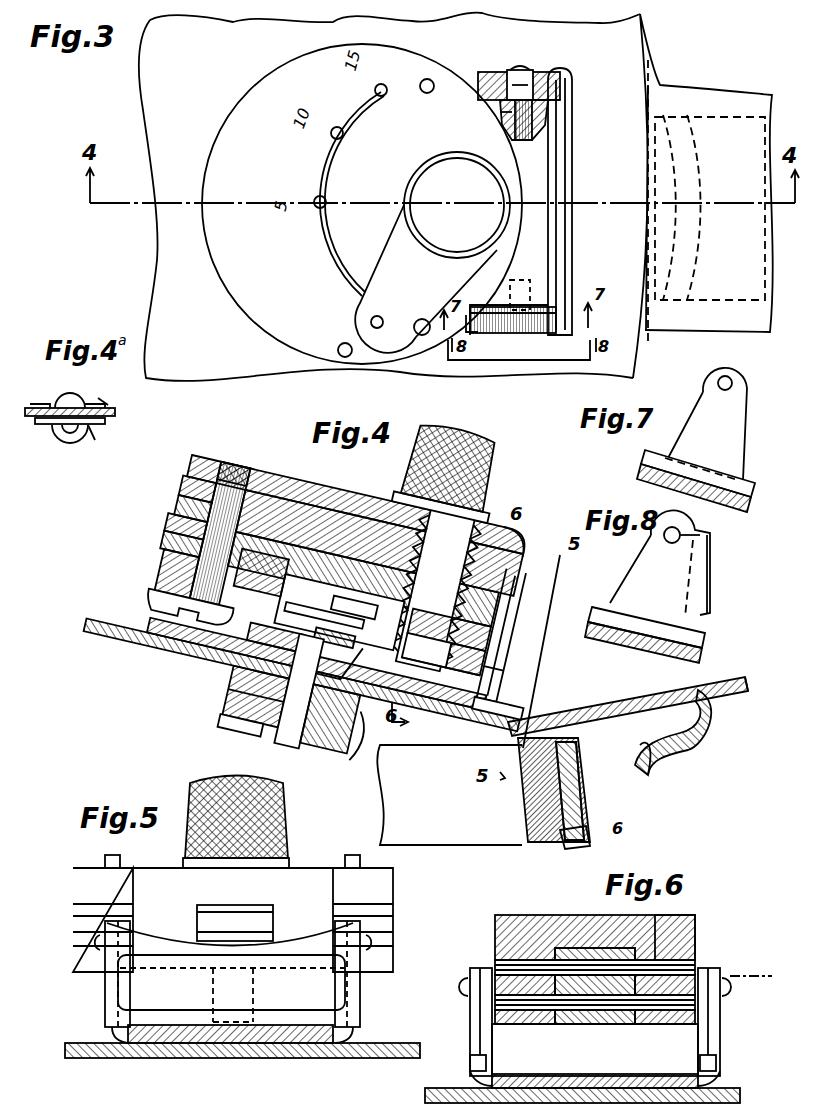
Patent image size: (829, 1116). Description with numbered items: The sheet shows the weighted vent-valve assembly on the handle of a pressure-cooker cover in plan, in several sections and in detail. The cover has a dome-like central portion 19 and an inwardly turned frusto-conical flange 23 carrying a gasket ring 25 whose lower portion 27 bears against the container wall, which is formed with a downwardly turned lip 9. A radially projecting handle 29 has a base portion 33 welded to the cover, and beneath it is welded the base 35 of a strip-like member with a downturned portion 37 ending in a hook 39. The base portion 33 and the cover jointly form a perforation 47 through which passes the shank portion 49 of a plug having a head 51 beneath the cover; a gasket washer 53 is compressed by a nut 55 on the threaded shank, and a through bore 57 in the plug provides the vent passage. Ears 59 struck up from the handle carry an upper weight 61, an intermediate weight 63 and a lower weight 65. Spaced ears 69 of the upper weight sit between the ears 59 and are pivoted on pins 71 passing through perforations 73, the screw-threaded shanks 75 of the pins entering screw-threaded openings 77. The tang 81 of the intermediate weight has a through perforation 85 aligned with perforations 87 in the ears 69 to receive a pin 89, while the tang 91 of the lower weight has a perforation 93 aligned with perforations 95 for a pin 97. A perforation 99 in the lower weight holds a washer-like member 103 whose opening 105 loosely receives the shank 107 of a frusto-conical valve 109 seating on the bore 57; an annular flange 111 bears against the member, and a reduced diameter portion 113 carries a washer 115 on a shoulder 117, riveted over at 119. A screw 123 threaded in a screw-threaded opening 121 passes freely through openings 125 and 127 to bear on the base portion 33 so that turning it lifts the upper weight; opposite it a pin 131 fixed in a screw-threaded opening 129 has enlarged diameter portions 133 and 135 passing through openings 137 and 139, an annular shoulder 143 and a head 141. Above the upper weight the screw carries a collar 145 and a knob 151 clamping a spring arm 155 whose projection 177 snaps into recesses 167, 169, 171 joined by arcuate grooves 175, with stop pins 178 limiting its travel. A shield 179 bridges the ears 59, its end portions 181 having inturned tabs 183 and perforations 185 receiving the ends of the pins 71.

In FIG. 3, the downwardly turned lip 9 is at (705, 190).
In FIG. 3, the dome-like central portion 19 is at (160, 105).
In FIG. 4, the dome-like central portion 19 is at (121, 645).
In FIG. 7, the dome-like central portion 19 is at (750, 510).
In FIG. 8, the dome-like central portion 19 is at (643, 642).
In FIG. 5, the dome-like central portion 19 is at (250, 1058).
In FIG. 6, the dome-like central portion 19 is at (428, 1092).
In FIG. 4, the frusto-conical flange 23 is at (590, 800).
In FIG. 4, the gasket ring 25 is at (520, 790).
In FIG. 4, the lower portion of gasket ring 27 is at (592, 845).
In FIG. 3, the handle 29 is at (730, 90).
In FIG. 4, the handle 29 is at (633, 690).
In FIG. 5, the handle 29 is at (178, 1043).
In FIG. 6, the handle 29 is at (565, 1088).
In FIG. 4, the base portion 33 is at (175, 645).
In FIG. 7, the base portion 33 is at (748, 478).
In FIG. 3, the base of strip-like member 35 is at (735, 118).
In FIG. 4, the base of strip-like member 35 is at (746, 700).
In FIG. 4, the downturned portion 37 is at (688, 752).
In FIG. 3, the hook 39 is at (690, 265).
In FIG. 4, the hook 39 is at (648, 775).
In FIG. 4, the perforation 47 is at (232, 650).
In FIG. 4, the shank portion 49 is at (252, 705).
In FIG. 4, the head 51 is at (240, 682).
In FIG. 4, the gasket washer 53 is at (368, 728).
In FIG. 4, the nut 55 is at (248, 618).
In FIG. 4, the through bore 57 is at (292, 700).
In FIG. 3, the ears 59 is at (562, 80).
In FIG. 4, the ears 59 is at (490, 676).
In FIG. 7, the ears 59 is at (748, 420).
In FIG. 5, the ears 59 is at (106, 992).
In FIG. 6, the ears 59 is at (482, 1008).
In FIG. 3, the upper weight 61 is at (278, 78).
In FIG. 4, the upper weight 61 is at (198, 456).
In FIG. 5, the upper weight 61 is at (78, 888).
In FIG. 6, the upper weight 61 is at (512, 913).
In FIG. 4, the intermediate weight 63 is at (175, 505).
In FIG. 5, the intermediate weight 63 is at (75, 918).
In FIG. 4, the lower weight 65 is at (170, 566).
In FIG. 5, the lower weight 65 is at (75, 955).
In FIG. 3, the ears of upper weight 69 is at (540, 100).
In FIG. 5, the ears of upper weight 69 is at (152, 925).
In FIG. 6, the ears of upper weight 69 is at (528, 1026).
In FIG. 3, the pins 71 is at (510, 72).
In FIG. 6, the pins 71 is at (728, 988).
In FIG. 3, the perforations 73 is at (485, 75).
In FIG. 7, the perforations 73 is at (733, 383).
In FIG. 3, the screw-threaded shanks 75 is at (523, 142).
In FIG. 3, the screw-threaded openings 77 is at (500, 120).
In FIG. 4, the screw-threaded openings 77 is at (518, 630).
In FIG. 4, the tang 81 is at (505, 600).
In FIG. 5, the tang 81 is at (235, 910).
In FIG. 6, the tang 81 is at (575, 960).
In FIG. 6, the through perforation 85 is at (618, 947).
In FIG. 6, the perforations 87 is at (680, 940).
In FIG. 4, the pin 89 is at (518, 532).
In FIG. 6, the pin 89 is at (515, 965).
In FIG. 6, the tang 91 is at (565, 1012).
In FIG. 6, the perforation 93 is at (602, 1022).
In FIG. 6, the perforations 95 is at (512, 1024).
In FIG. 4, the pin 97 is at (430, 648).
In FIG. 6, the pin 97 is at (586, 1000).
In FIG. 4, the perforation 99 is at (285, 575).
In FIG. 4A, the washer-like member 103 is at (115, 412).
In FIG. 4, the washer-like member 103 is at (345, 615).
In FIG. 4A, the opening 105 is at (40, 424).
In FIG. 4A, the shank 107 is at (60, 440).
In FIG. 4A, the frusto-conical valve 109 is at (72, 445).
In FIG. 4, the frusto-conical valve 109 is at (290, 605).
In FIG. 4A, the annular flange 111 is at (107, 440).
In FIG. 4A, the reduced diameter portion 113 is at (68, 404).
In FIG. 4A, the washer 115 is at (42, 404).
In FIG. 4A, the shoulder 117 is at (118, 396).
In FIG. 4A, the riveted-over portion 119 is at (95, 404).
In FIG. 4, the screw-threaded opening 121 is at (392, 495).
In FIG. 4, the screw 123 is at (432, 668).
In FIG. 4, the opening 125 is at (320, 580).
In FIG. 4, the opening 127 is at (372, 617).
In FIG. 4, the screw-threaded opening 129 is at (250, 478).
In FIG. 4, the pin 131 is at (218, 467).
In FIG. 4, the enlarged diameter portion 133 is at (190, 495).
In FIG. 4, the enlarged diameter portion 135 is at (185, 583).
In FIG. 4, the opening 137 is at (190, 520).
In FIG. 4, the opening 139 is at (187, 556).
In FIG. 4, the head 141 is at (190, 596).
In FIG. 4, the annular shoulder 143 is at (185, 540).
In FIG. 4, the collar 145 is at (498, 498).
In FIG. 3, the knob 151 is at (438, 172).
In FIG. 4, the knob 151 is at (500, 470).
In FIG. 5, the knob 151 is at (278, 808).
In FIG. 3, the spring arm 155 is at (372, 270).
In FIG. 3, the recess 167 is at (381, 96).
In FIG. 3, the recess 169 is at (340, 139).
In FIG. 3, the recess 171 is at (326, 207).
In FIG. 3, the arcuate grooves 175 is at (320, 245).
In FIG. 3, the projection 177 is at (380, 316).
In FIG. 3, the stop pins 178 is at (427, 78).
In FIG. 5, the stop pins 178 is at (108, 858).
In FIG. 3, the shield 179 is at (573, 158).
In FIG. 4, the shield 179 is at (520, 656).
In FIG. 8, the shield 179 is at (712, 588).
In FIG. 5, the shield 179 is at (170, 945).
In FIG. 3, the end portions of shield 181 is at (542, 72).
In FIG. 8, the end portions of shield 181 is at (645, 540).
In FIG. 5, the end portions of shield 181 is at (360, 1012).
In FIG. 6, the end portions of shield 181 is at (472, 1035).
In FIG. 3, the inturned tabs 183 is at (478, 92).
In FIG. 4, the inturned tabs 183 is at (442, 730).
In FIG. 8, the inturned tabs 183 is at (615, 595).
In FIG. 6, the inturned tabs 183 is at (716, 1063).
In FIG. 3, the perforations 185 is at (514, 68).
In FIG. 8, the perforations 185 is at (716, 540).